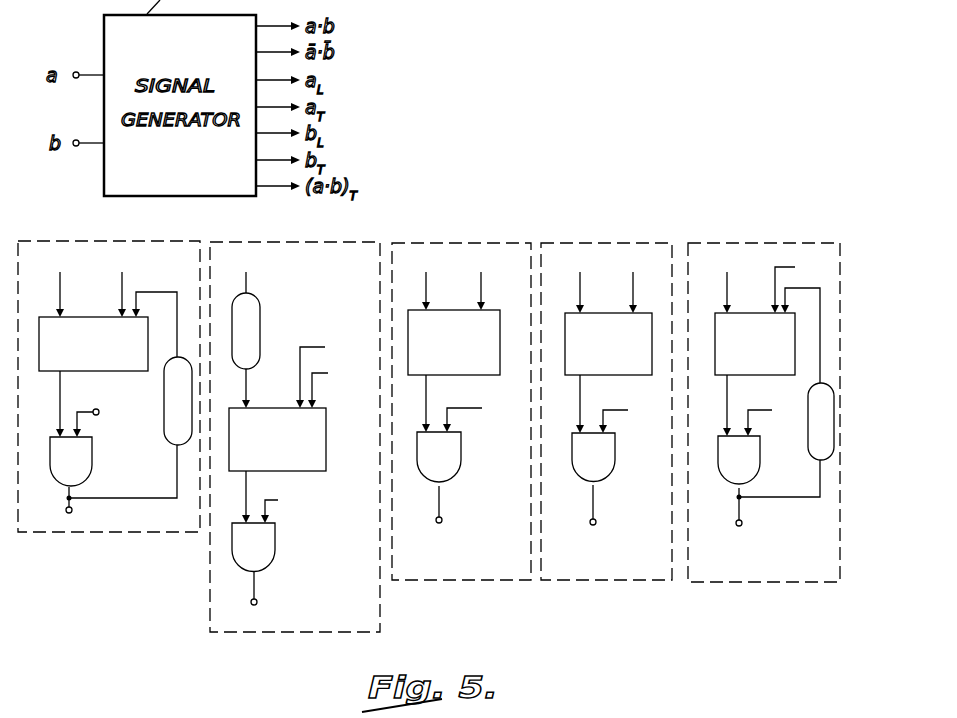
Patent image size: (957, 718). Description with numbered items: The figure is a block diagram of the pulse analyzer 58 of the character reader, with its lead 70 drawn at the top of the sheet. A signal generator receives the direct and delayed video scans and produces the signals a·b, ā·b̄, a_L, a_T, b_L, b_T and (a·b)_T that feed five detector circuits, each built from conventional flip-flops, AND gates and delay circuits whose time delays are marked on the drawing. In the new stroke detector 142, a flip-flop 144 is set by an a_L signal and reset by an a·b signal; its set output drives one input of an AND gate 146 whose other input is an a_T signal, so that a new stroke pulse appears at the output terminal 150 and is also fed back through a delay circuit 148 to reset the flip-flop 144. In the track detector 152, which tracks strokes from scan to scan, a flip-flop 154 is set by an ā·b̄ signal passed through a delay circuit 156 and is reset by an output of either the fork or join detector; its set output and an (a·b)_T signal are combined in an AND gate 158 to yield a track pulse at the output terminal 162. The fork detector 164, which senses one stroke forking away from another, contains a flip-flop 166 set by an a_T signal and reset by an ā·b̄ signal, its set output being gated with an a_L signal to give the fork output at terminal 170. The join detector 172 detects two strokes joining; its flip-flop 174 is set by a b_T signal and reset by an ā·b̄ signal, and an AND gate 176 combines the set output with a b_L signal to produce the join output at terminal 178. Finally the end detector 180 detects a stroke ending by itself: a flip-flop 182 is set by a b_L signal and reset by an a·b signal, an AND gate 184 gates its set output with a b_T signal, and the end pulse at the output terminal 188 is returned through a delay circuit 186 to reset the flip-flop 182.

The pulse analyzer 58 is at (439, 76).
The lead 70 is at (556, 0).
The new stroke detector 142 is at (125, 532).
The flip-flop 144 is at (90, 317).
The AND gate 146 is at (92, 465).
The delay circuit 148 is at (165, 432).
The output terminal 150 is at (66, 510).
The track detector 152 is at (305, 632).
The flip-flop 154 is at (326, 420).
The delay circuit 156 is at (260, 318).
The AND gate 158 is at (275, 548).
The output terminal 162 is at (258, 600).
The fork detector 164 is at (475, 580).
The flip-flop 166 is at (460, 302).
The FORK output terminal 170 is at (443, 517).
The join detector 172 is at (617, 580).
The flip-flop 174 is at (612, 304).
The AND gate 176 is at (615, 460).
The JOIN output terminal 178 is at (597, 520).
The end detector 180 is at (758, 582).
The flip-flop 182 is at (756, 304).
The AND gate 184 is at (722, 482).
The delay circuit 186 is at (808, 455).
The output terminal 188 is at (744, 521).